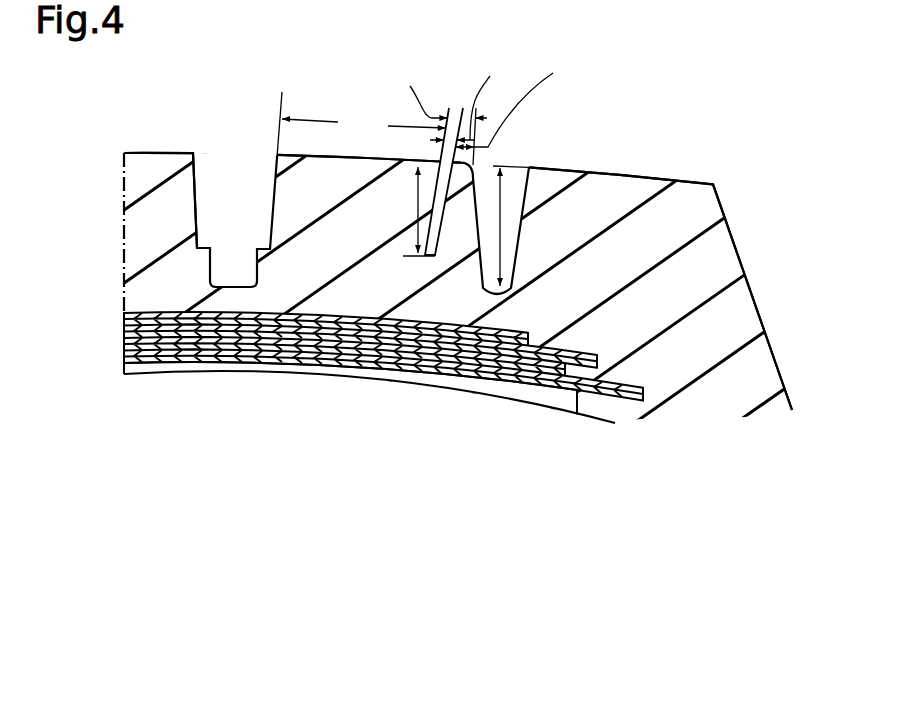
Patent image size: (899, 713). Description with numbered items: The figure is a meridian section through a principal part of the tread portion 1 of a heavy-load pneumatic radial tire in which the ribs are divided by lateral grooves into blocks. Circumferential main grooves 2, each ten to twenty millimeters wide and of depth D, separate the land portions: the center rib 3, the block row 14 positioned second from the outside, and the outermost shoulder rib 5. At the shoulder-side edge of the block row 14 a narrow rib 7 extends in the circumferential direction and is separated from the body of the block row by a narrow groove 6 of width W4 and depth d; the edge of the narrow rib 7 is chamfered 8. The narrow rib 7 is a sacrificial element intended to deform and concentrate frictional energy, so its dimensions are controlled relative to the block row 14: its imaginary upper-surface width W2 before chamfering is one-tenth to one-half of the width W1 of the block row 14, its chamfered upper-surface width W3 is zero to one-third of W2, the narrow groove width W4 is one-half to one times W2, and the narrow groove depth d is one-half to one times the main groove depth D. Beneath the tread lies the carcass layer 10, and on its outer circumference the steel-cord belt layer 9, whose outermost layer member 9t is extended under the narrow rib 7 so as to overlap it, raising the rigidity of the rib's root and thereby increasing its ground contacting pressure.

The tread portion 1 is at (658, 178).
The main groove 2 is at (232, 263).
The center rib 3 is at (157, 170).
The shoulder rib 5 is at (685, 198).
The narrow groove 6 is at (433, 217).
The narrow rib 7 is at (490, 218).
The chamfer 8 is at (466, 205).
The belt layer 9 is at (318, 306).
The outermost layer member of the belt layer 9t is at (183, 311).
The carcass layer 10 is at (583, 416).
The block row 14 is at (330, 157).
The width of the block row W1 is at (364, 129).
The imaginary width of the upper surface of the narrow rib W2 is at (472, 95).
The width of the chamfered upper surface of the narrow rib W3 is at (523, 103).
The width of the narrow groove W4 is at (436, 89).
The depth of the narrow groove d is at (418, 211).
The depth of the main groove D is at (500, 227).